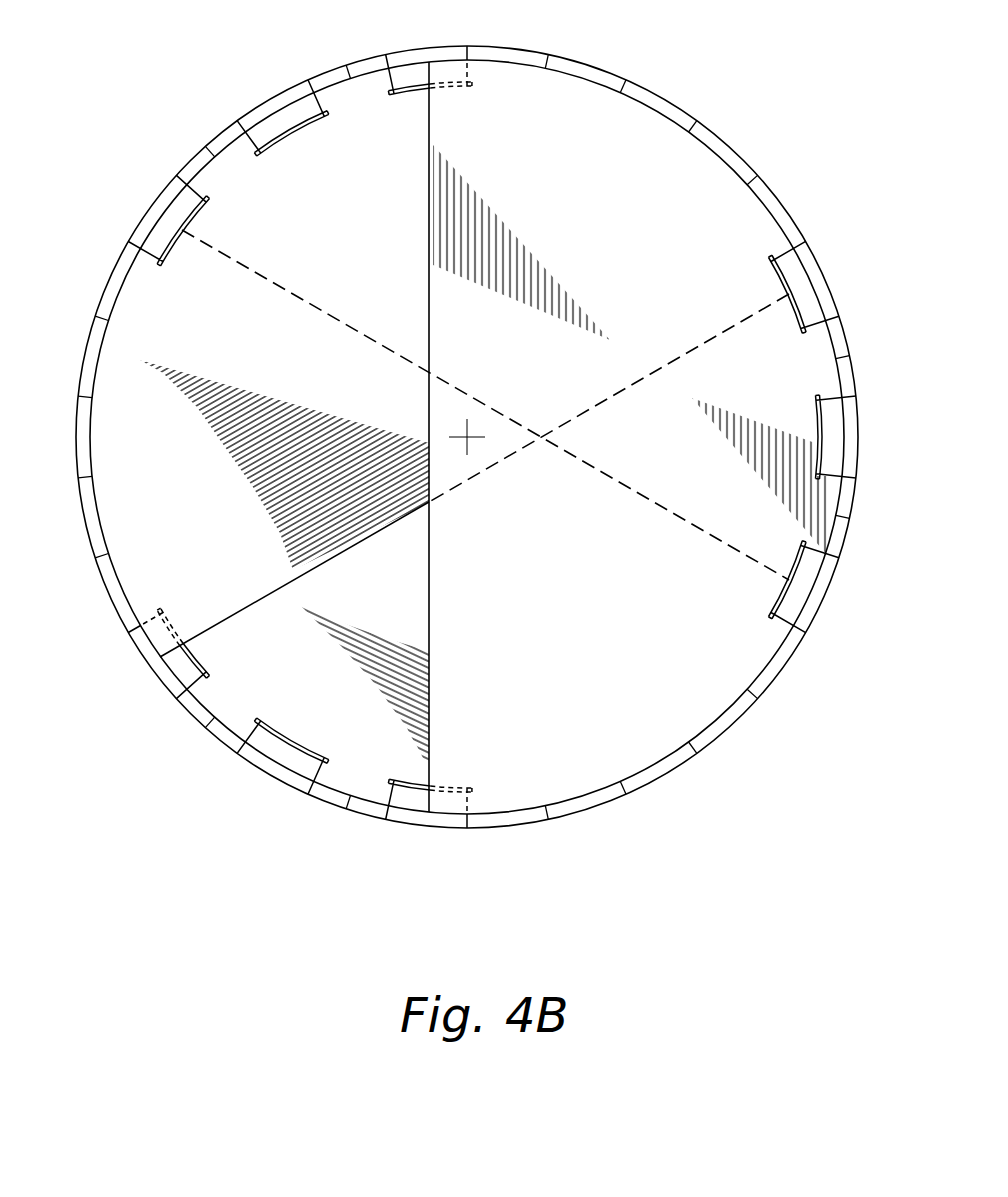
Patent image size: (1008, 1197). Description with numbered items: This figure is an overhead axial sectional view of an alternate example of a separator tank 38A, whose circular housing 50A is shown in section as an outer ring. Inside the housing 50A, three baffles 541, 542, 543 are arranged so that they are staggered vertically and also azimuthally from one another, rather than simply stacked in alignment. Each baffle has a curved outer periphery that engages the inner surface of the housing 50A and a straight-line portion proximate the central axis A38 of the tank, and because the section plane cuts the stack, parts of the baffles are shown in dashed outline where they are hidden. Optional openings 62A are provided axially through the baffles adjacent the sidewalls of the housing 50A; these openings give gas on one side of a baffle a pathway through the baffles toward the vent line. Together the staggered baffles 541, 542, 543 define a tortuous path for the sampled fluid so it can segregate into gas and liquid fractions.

The separator tank 38A is at (158, 84).
The housing 50A is at (648, 90).
The openings 62A is at (405, 84).
The baffle 541 is at (628, 437).
The baffle 542 is at (464, 405).
The baffle 543 is at (474, 529).
The axis A38 is at (471, 435).